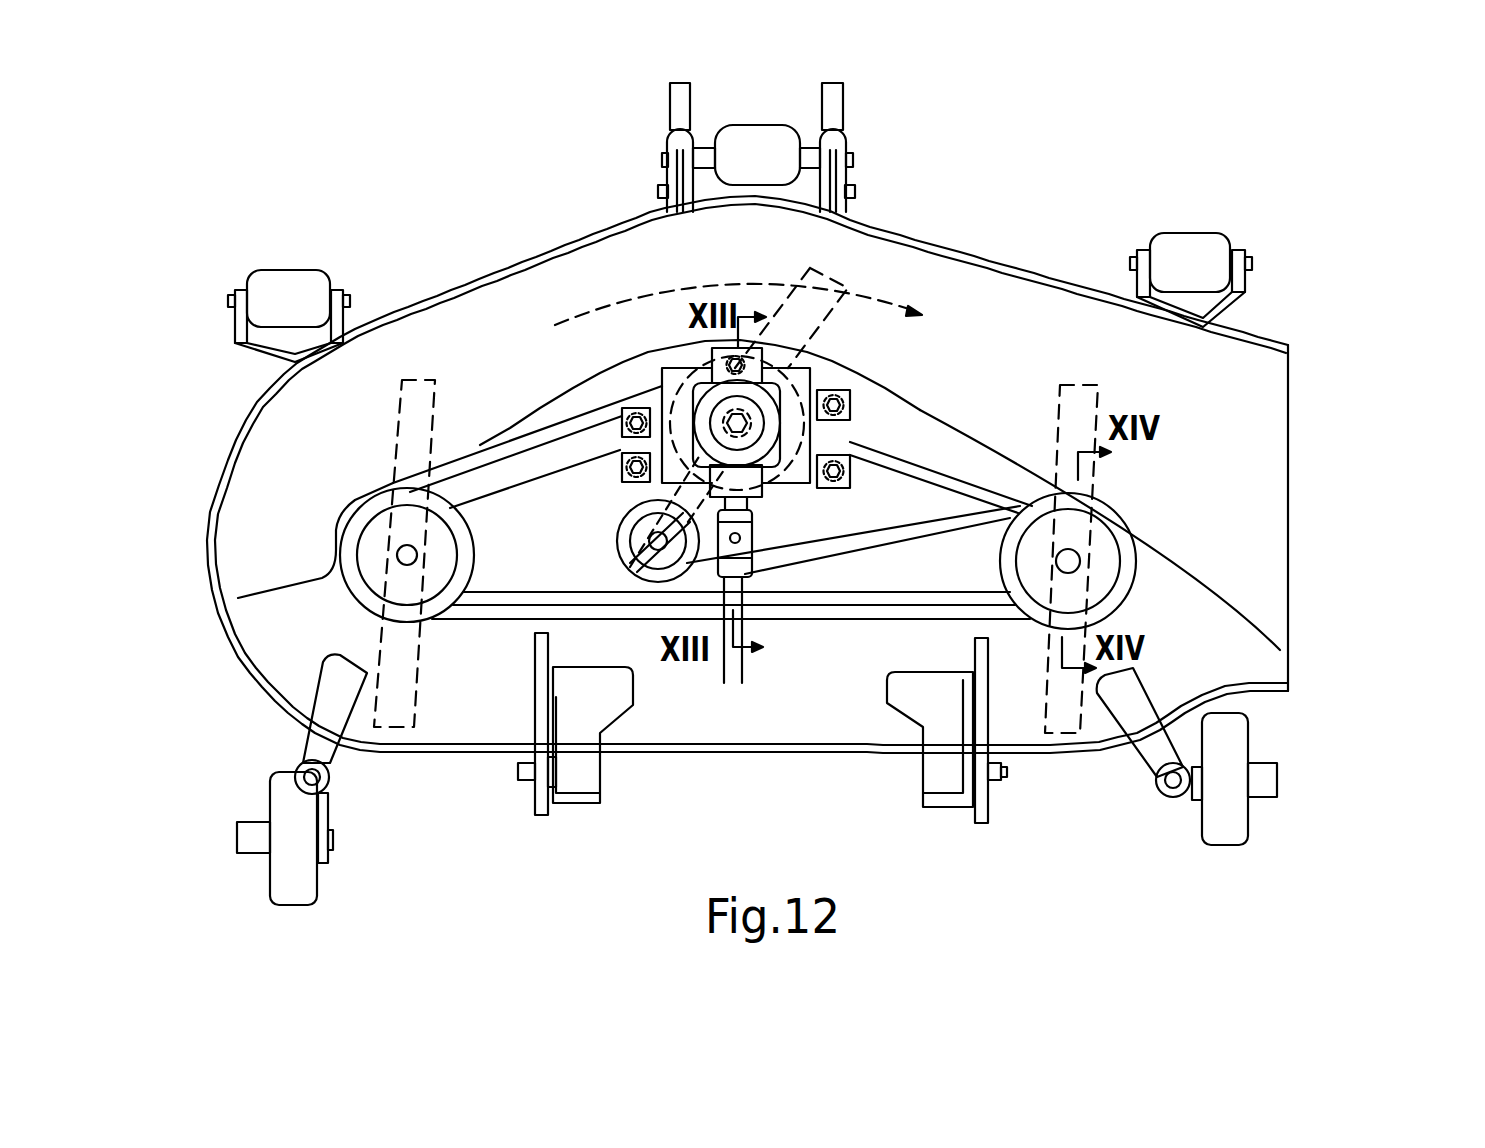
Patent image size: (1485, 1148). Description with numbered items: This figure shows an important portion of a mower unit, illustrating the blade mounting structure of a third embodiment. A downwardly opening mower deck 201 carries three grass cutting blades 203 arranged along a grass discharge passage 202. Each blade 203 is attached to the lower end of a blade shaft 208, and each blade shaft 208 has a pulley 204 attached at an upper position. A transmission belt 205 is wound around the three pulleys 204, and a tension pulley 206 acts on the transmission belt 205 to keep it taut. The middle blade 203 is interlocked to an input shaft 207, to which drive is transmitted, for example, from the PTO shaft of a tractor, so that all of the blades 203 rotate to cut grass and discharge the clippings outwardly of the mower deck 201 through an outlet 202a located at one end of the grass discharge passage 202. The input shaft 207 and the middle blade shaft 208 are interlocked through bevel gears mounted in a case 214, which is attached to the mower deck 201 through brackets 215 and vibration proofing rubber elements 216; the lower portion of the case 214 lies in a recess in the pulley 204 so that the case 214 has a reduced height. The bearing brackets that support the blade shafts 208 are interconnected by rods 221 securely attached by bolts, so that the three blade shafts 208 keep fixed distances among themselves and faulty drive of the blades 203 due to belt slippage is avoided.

The mower deck 201 is at (467, 310).
The grass discharge passage 202 is at (632, 410).
The outlet 202a is at (1298, 450).
The grass cutting blade 203 is at (400, 397).
The pulley 204 is at (363, 590).
The transmission belt 205 is at (493, 450).
The tension pulley 206 is at (620, 550).
The input shaft 207 is at (750, 503).
The blade shaft 208 is at (400, 558).
The case 214 is at (805, 487).
The bracket 215 is at (613, 445).
The vibration proofing rubber element 216 is at (877, 496).
The rod 221 is at (522, 485).